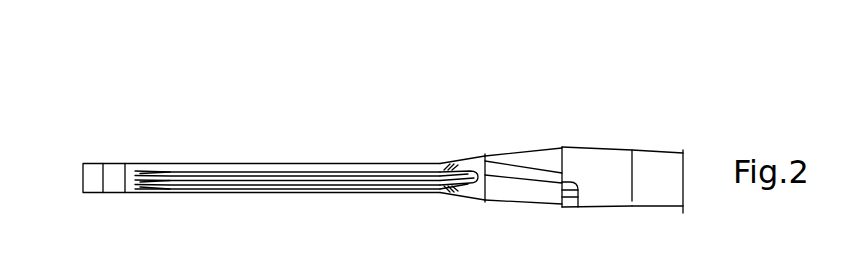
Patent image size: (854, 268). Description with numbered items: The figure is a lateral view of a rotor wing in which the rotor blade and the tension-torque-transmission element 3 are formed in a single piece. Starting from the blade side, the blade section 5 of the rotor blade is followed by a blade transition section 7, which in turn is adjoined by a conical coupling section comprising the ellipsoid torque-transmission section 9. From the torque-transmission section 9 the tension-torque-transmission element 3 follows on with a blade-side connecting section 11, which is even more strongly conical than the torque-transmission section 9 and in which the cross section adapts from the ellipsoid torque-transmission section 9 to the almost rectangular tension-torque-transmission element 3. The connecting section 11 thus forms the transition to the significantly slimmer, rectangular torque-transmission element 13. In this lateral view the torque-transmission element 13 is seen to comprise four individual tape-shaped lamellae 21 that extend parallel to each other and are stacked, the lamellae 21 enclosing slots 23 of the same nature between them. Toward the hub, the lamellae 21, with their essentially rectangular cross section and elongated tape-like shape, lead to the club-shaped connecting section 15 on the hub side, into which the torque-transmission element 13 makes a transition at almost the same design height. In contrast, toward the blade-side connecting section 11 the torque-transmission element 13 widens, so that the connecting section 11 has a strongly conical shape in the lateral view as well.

The tension-torque-transmission element 3 is at (359, 86).
The blade section 5 is at (657, 155).
The blade transition section 7 is at (593, 152).
The torque-transmission section 9 is at (523, 153).
The blade-side connecting section 11 is at (477, 155).
The torque-transmission element 13 is at (182, 159).
The hub-side connecting section 15 is at (142, 163).
The lamellae 21 is at (232, 181).
The slots 23 is at (253, 185).